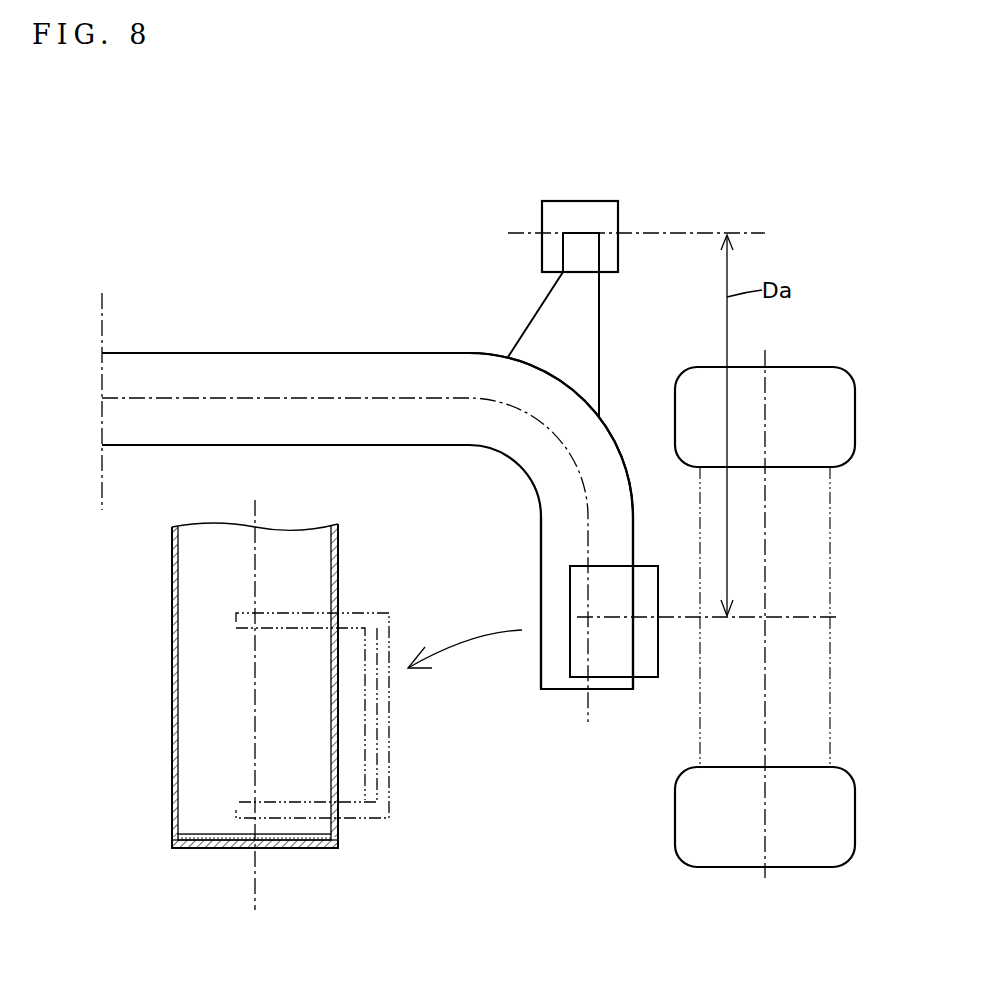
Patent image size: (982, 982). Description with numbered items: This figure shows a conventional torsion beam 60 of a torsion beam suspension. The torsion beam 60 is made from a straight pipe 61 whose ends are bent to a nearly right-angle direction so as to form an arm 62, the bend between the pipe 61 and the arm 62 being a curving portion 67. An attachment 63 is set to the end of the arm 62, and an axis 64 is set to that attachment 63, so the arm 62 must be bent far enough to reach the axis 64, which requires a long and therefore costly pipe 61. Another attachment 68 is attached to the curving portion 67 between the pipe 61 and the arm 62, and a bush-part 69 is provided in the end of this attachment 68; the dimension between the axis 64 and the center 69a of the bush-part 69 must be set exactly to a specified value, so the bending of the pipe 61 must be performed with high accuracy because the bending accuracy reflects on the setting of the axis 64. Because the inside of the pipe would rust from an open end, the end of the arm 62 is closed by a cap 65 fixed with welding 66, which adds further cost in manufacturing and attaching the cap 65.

The torsion beam 60 is at (212, 305).
The straight pipe 61 is at (277, 351).
The arm 62 is at (520, 572).
The attachment 63 is at (645, 678).
The axis 64 is at (838, 617).
The cap 65 is at (205, 832).
The welding 66 is at (282, 848).
The curving portion 67 is at (555, 400).
The attachment 68 is at (516, 322).
The bush-part 69 is at (600, 201).
The center of bush-part 69a is at (757, 233).